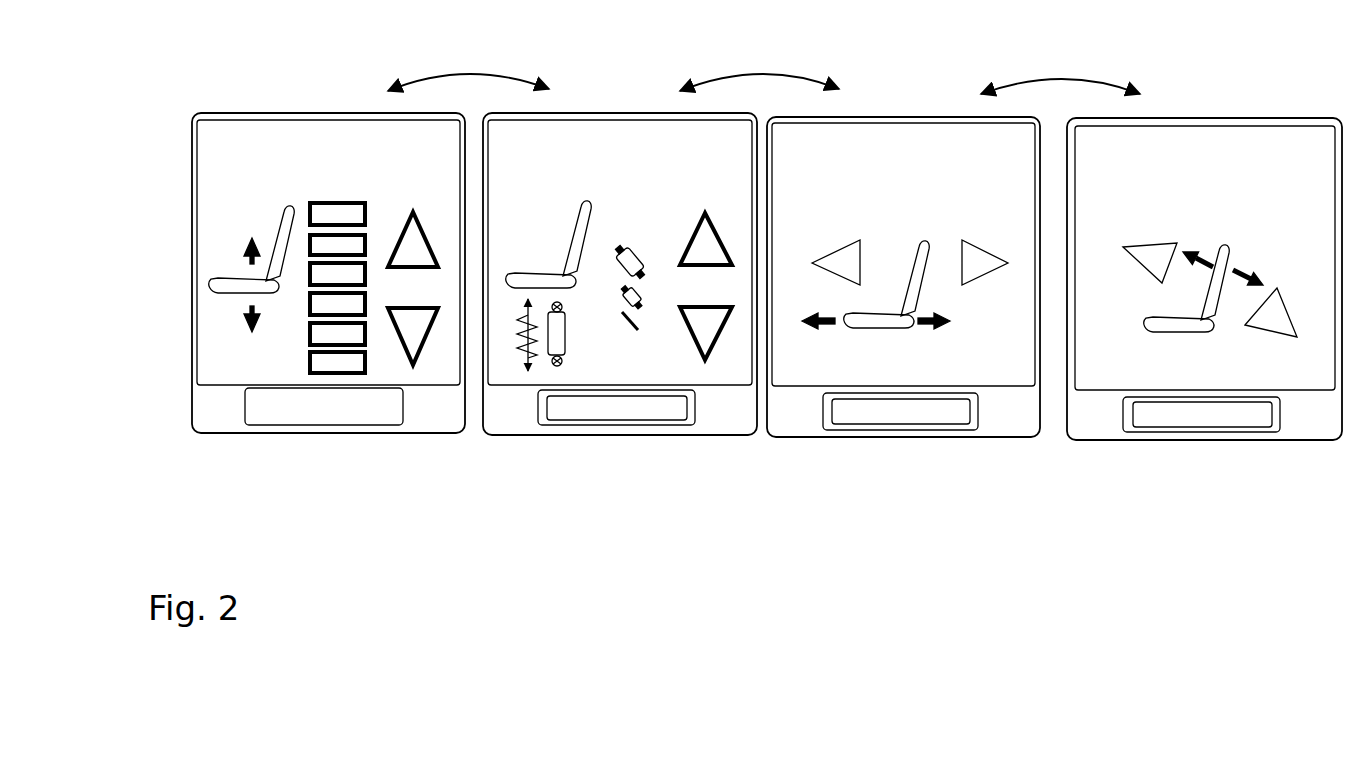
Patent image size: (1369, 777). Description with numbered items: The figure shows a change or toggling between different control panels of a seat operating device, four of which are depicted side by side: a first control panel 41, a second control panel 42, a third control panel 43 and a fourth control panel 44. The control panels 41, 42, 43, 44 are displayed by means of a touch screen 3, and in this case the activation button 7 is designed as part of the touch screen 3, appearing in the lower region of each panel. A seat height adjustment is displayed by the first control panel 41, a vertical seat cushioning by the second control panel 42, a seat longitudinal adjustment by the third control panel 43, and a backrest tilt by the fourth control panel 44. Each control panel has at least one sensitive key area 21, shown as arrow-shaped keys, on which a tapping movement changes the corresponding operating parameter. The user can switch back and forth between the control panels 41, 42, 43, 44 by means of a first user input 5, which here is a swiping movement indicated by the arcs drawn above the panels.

The touch screen 3 is at (200, 410).
The first user input 5 is at (467, 75).
The activation button 7 is at (377, 415).
The sensitive key area 21 is at (413, 215).
The first control panel 41 is at (222, 168).
The second control panel 42 is at (610, 130).
The third control panel 43 is at (888, 130).
The fourth control panel 44 is at (1185, 135).